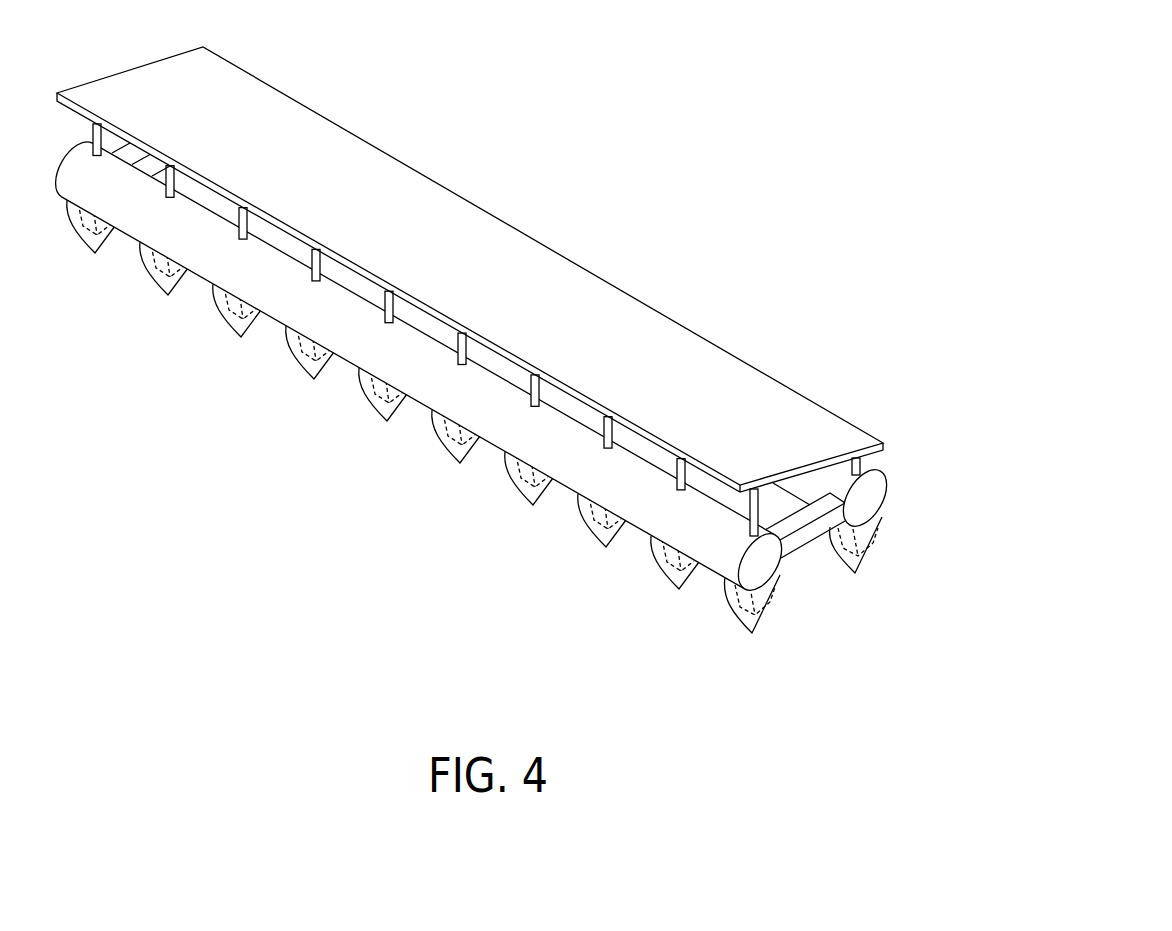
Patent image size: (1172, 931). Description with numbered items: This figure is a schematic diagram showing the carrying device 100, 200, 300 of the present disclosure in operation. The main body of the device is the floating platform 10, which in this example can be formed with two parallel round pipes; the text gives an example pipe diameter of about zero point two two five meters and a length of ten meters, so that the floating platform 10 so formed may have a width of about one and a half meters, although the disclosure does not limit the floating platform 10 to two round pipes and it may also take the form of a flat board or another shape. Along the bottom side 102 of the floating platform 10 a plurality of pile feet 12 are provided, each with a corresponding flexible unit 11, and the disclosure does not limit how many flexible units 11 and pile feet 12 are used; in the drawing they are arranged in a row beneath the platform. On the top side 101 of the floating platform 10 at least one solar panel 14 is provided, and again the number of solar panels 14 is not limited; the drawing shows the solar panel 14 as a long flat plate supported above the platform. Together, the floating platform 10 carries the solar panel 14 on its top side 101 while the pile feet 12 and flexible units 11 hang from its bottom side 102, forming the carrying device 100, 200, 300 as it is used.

The solar panel 14 is at (838, 422).
The floating platform 10 is at (978, 585).
The flexible unit 11 is at (868, 557).
The pile foot 12 is at (880, 528).
The top side 101 is at (737, 568).
The bottom side 102 is at (728, 575).
The carrying device 100 is at (929, 570).
The carrying device 200 is at (848, 540).
The carrying device 300 is at (848, 540).